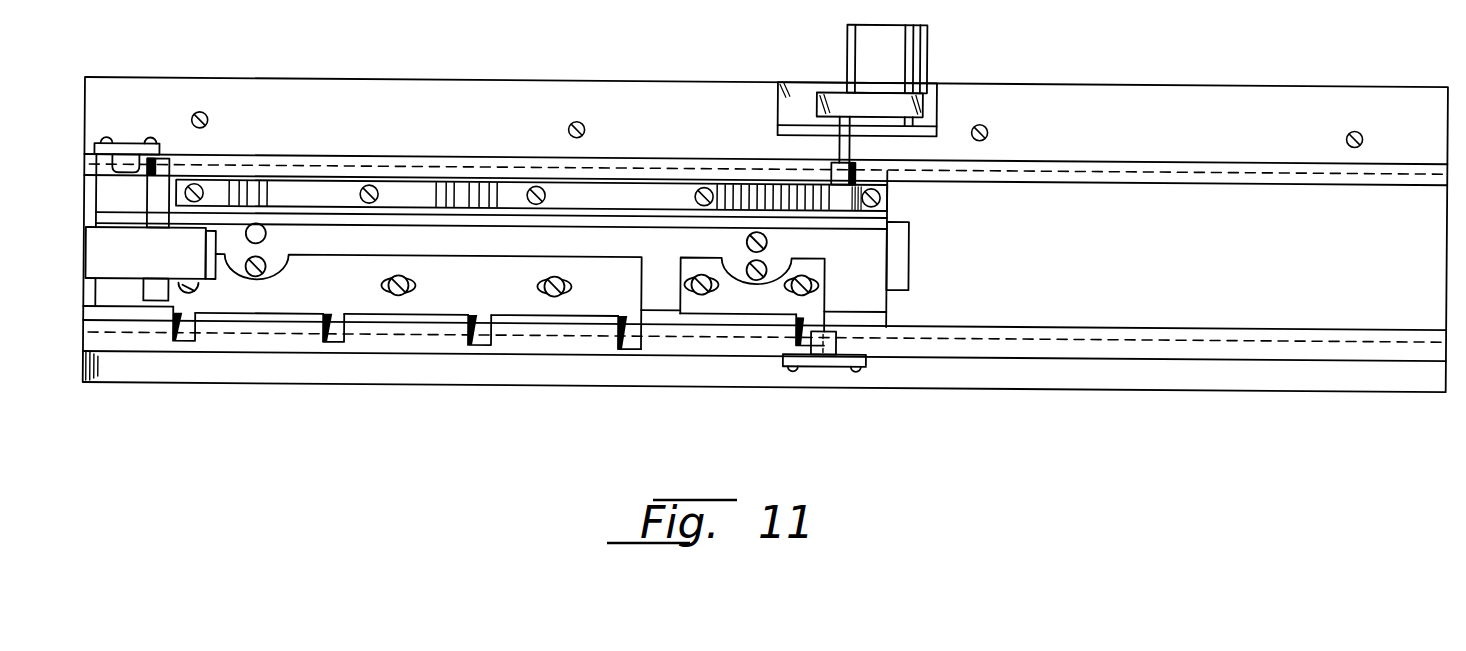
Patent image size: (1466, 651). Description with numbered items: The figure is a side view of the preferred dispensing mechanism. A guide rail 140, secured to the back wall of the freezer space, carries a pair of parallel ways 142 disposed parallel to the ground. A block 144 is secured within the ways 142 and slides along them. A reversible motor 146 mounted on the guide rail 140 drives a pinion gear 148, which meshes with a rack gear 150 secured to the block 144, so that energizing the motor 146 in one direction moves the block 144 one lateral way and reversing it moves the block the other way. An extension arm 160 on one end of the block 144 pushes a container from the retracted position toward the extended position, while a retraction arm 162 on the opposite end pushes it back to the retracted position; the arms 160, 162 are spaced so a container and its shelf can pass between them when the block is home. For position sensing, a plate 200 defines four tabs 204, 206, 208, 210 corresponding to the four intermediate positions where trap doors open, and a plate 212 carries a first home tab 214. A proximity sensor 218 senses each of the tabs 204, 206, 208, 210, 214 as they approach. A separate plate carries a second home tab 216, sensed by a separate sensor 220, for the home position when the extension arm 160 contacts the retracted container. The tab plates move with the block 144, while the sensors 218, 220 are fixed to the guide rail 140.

The guide rail 140 is at (1283, 78).
The parallel ways 142 is at (1190, 155).
The block 144 is at (893, 208).
The reversible motor 146 is at (927, 49).
The pinion gear 148 is at (858, 182).
The rack gear 150 is at (668, 181).
The extension arm 160 is at (136, 262).
The retraction arm 162 is at (910, 252).
The plate 200 is at (507, 262).
The tab 204 is at (195, 342).
The tab 206 is at (338, 342).
The tab 208 is at (490, 344).
The tab 210 is at (633, 343).
The plate 212 is at (797, 266).
The first home tab 214 is at (802, 328).
The second home tab 216 is at (167, 169).
The proximity sensor 218 is at (832, 348).
The sensor 220 is at (127, 160).